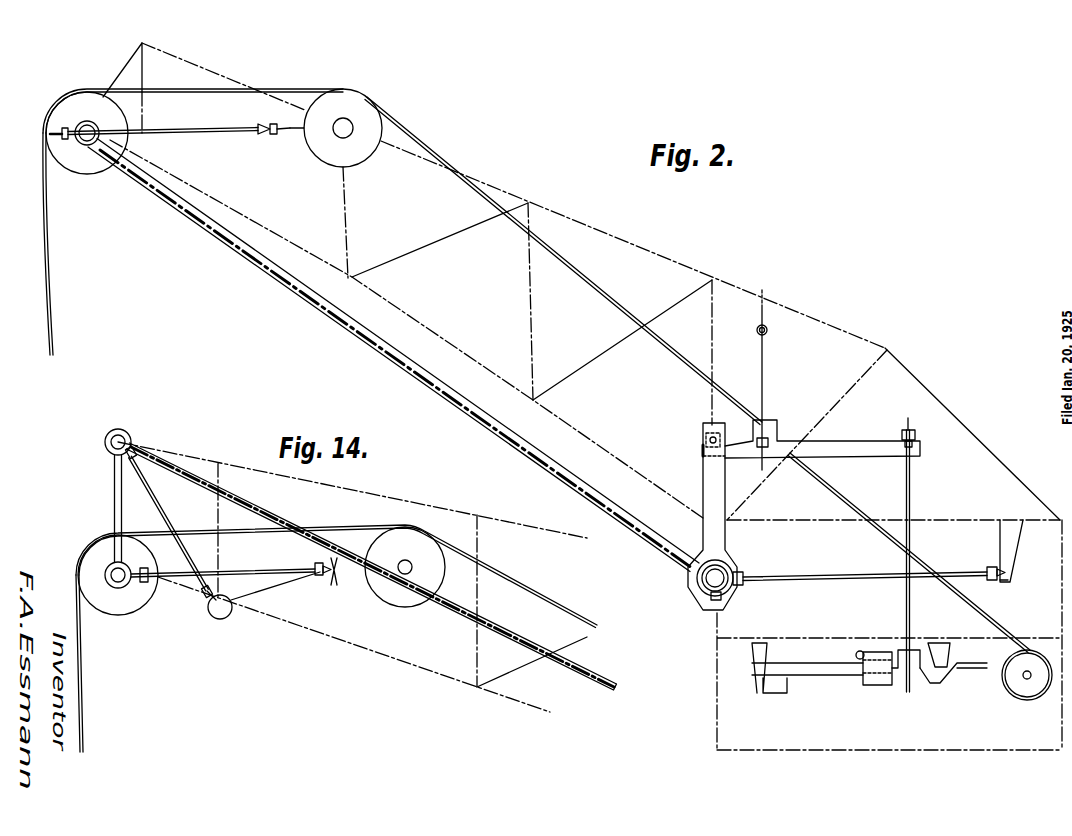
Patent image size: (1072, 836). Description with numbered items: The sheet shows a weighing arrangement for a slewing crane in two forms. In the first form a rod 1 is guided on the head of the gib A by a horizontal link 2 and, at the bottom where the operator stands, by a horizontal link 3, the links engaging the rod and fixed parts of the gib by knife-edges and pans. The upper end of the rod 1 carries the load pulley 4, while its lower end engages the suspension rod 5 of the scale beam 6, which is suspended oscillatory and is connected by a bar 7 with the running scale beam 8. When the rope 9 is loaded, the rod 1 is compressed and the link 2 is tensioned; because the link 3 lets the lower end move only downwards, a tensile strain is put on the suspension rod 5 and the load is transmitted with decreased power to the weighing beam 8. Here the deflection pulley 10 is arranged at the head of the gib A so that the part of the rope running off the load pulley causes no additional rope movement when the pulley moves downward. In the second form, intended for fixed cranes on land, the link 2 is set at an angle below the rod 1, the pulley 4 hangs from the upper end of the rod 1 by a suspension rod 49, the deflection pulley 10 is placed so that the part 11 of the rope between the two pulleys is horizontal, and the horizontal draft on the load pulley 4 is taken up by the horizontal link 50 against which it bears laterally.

In FIG. 2, the rod 1 is at (213, 227).
In FIG. 14, the rod 1 is at (452, 610).
In FIG. 2, the horizontal link 2 is at (200, 134).
In FIG. 14, the horizontal link 2 is at (177, 510).
In FIG. 2, the horizontal link 3 is at (813, 575).
In FIG. 2, the load pulley 4 is at (93, 167).
In FIG. 14, the load pulley 4 is at (133, 607).
In FIG. 2, the suspension rod 5 is at (735, 478).
In FIG. 2, the scale beam 6 is at (825, 442).
In FIG. 2, the bar 7 is at (920, 495).
In FIG. 2, the running scale beam 8 is at (825, 667).
In FIG. 2, the rope 9 is at (50, 253).
In FIG. 14, the rope 9 is at (93, 652).
In FIG. 2, the deflection pulley 10 is at (362, 98).
In FIG. 14, the deflection pulley 10 is at (440, 578).
In FIG. 2, the part of the rope 11 is at (167, 92).
In FIG. 14, the part of the rope 11 is at (330, 527).
In FIG. 14, the suspension rod 49 is at (117, 500).
In FIG. 14, the horizontal link 50 is at (257, 573).
In FIG. 2, the gib A is at (633, 247).
In FIG. 14, the gib A is at (393, 495).